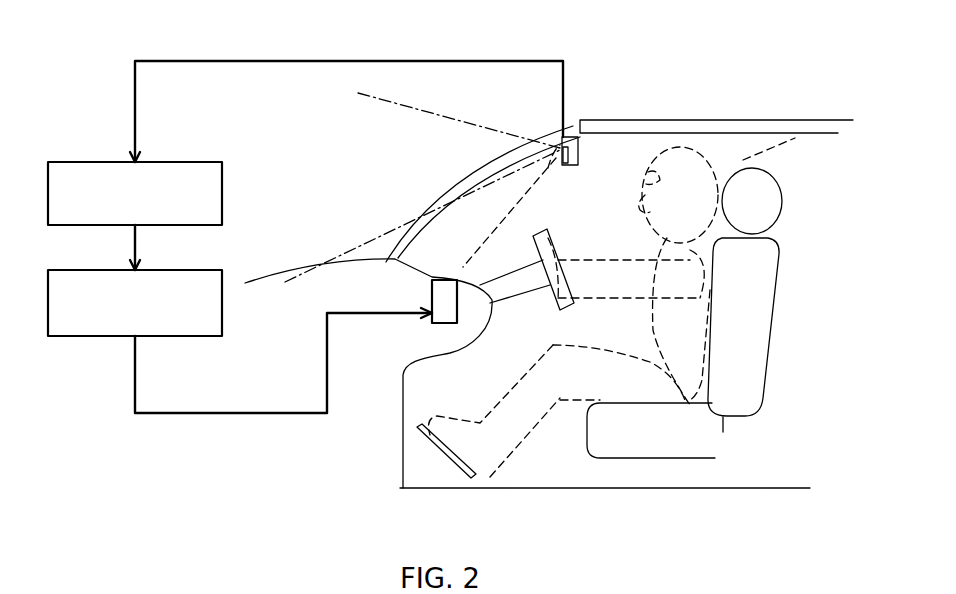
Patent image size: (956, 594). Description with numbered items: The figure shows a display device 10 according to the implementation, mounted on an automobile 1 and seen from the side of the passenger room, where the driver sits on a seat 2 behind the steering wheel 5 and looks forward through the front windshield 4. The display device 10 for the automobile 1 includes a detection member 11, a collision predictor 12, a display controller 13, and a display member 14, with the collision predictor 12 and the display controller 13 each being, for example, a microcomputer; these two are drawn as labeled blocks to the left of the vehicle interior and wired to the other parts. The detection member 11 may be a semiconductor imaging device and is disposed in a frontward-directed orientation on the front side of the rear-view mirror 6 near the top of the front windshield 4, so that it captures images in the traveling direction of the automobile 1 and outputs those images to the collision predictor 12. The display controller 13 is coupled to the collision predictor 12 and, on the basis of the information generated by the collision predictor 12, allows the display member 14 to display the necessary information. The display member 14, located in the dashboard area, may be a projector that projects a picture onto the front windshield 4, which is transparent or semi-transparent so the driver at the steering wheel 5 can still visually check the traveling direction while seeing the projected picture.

The automobile 1 is at (792, 132).
The seat 2 is at (733, 320).
The front windshield 4 is at (467, 188).
The steering wheel 5 is at (562, 310).
The rear-view mirror 6 is at (588, 155).
The display device 10 is at (583, 41).
The detection member 11 is at (553, 148).
The collision predictor 12 is at (197, 177).
The display controller 13 is at (203, 282).
The display member 14 is at (440, 323).